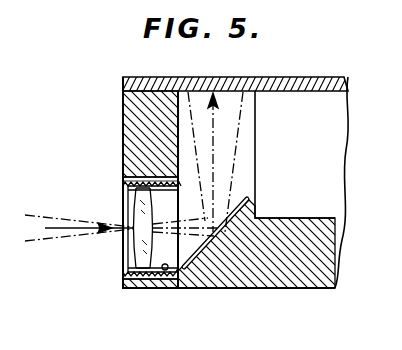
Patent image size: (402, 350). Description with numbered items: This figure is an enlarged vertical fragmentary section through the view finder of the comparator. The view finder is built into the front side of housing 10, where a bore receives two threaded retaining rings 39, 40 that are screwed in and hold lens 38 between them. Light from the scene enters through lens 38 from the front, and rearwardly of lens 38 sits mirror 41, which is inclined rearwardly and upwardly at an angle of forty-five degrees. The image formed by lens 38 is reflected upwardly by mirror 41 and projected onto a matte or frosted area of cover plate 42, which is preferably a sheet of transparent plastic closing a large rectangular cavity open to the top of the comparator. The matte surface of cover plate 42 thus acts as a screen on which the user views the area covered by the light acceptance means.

The housing 10 is at (285, 273).
The lens 38 is at (133, 250).
The threaded retaining ring 39 is at (122, 183).
The threaded retaining ring 40 is at (163, 271).
The mirror 41 is at (248, 200).
The cover plate 42 is at (339, 66).